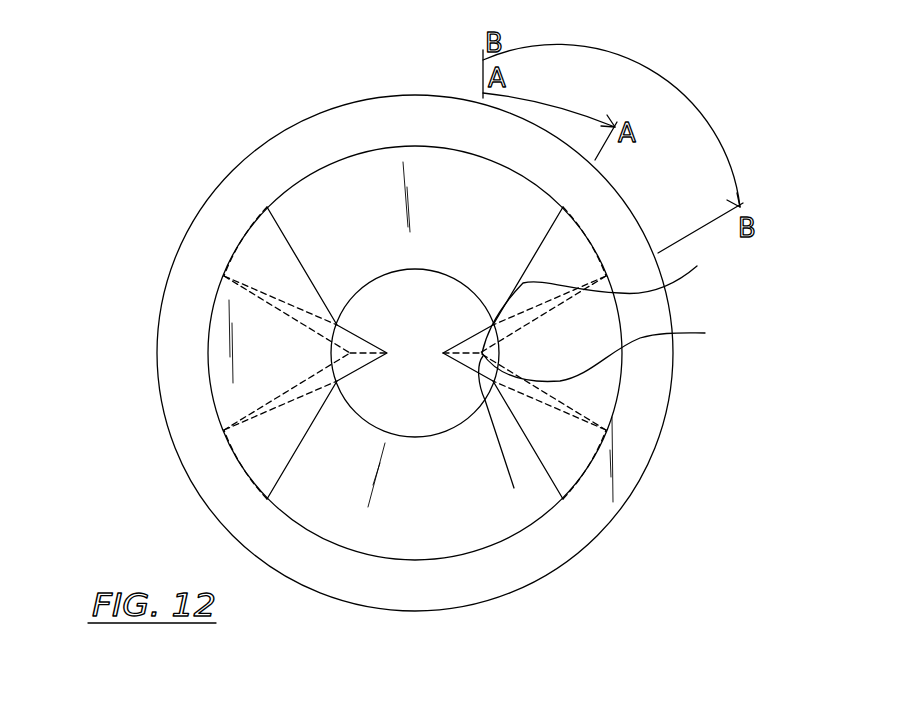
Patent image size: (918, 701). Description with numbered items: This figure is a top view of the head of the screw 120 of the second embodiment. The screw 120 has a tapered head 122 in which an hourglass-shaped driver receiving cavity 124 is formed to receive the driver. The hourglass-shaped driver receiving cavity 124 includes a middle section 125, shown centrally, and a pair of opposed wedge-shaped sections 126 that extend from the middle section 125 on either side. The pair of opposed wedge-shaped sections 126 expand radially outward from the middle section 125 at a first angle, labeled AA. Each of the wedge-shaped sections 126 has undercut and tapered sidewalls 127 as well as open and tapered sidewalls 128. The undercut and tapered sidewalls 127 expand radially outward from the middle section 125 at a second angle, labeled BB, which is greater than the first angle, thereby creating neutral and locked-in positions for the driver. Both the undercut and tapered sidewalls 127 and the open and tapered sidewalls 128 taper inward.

The screw 120 is at (392, 349).
The tapered head 122 is at (200, 492).
The hourglass-shaped driver receiving cavity 124 is at (462, 387).
The middle section 125 is at (539, 351).
The opposed wedge-shaped sections 126 is at (297, 253).
The undercut and tapered sidewalls 127 is at (300, 318).
The open and tapered sidewalls 128 is at (373, 197).